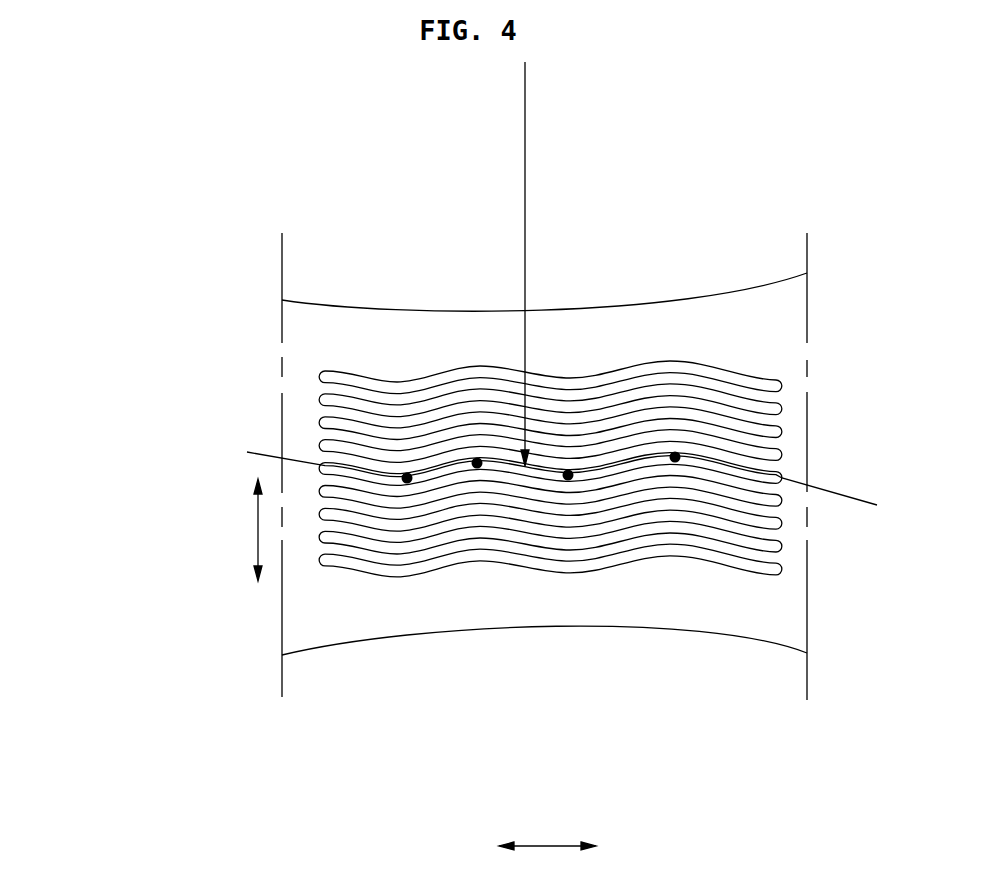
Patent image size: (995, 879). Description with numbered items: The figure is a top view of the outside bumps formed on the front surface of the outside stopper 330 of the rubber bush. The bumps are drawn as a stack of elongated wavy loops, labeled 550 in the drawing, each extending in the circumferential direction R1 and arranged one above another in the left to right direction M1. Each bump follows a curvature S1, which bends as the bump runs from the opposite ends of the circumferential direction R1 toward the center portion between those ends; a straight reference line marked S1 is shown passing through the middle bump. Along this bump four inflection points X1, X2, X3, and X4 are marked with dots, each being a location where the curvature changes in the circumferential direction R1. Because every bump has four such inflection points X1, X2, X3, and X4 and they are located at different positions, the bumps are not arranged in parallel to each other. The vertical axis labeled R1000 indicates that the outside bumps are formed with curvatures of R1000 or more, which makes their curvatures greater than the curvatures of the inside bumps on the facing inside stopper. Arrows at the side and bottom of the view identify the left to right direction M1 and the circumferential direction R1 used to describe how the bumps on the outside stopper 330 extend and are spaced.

The curvature radius R1000 is at (525, 128).
The coil pattern (serpentine conductor loops) 550 is at (418, 408).
The outside stopper 330 is at (680, 312).
The curvature S1 is at (857, 496).
The first inflection point X1 is at (407, 478).
The second inflection point X2 is at (477, 463).
The third inflection point X3 is at (568, 475).
The fourth inflection point X4 is at (675, 457).
The left to right direction M1 is at (158, 530).
The circumferential direction R1 is at (560, 806).